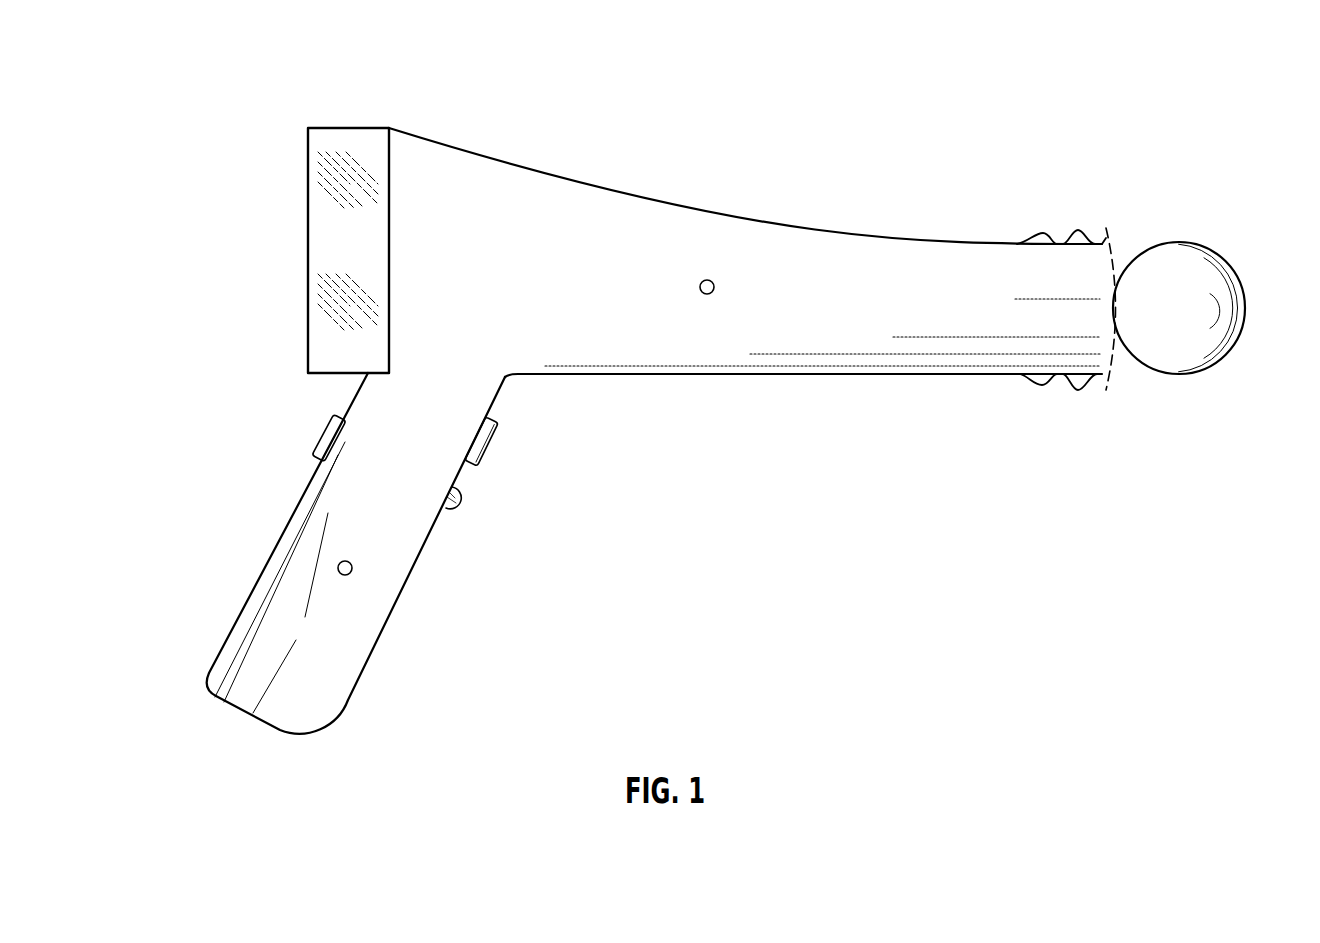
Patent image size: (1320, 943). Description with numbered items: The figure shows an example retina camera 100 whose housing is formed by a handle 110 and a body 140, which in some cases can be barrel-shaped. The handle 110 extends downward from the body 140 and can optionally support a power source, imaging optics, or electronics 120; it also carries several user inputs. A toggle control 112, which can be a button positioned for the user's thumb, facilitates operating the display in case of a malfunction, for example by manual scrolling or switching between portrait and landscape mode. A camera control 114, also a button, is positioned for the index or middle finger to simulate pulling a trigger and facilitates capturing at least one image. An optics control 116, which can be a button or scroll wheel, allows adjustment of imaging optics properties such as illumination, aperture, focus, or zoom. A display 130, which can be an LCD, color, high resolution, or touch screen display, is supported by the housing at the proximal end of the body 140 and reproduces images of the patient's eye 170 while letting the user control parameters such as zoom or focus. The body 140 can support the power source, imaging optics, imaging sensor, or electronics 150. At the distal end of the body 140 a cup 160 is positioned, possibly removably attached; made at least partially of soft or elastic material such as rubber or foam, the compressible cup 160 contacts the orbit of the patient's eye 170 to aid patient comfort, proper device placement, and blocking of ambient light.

The retina camera 100 is at (249, 70).
The handle 110 is at (336, 683).
The toggle control 112 is at (318, 431).
The camera control 114 is at (492, 443).
The optics control 116 is at (463, 505).
The electronics 120 is at (341, 561).
The display 130 is at (358, 150).
The body 140 is at (828, 330).
The electronics 150 is at (708, 280).
The cup 160 is at (1078, 228).
The patient's eye 170 is at (1209, 246).